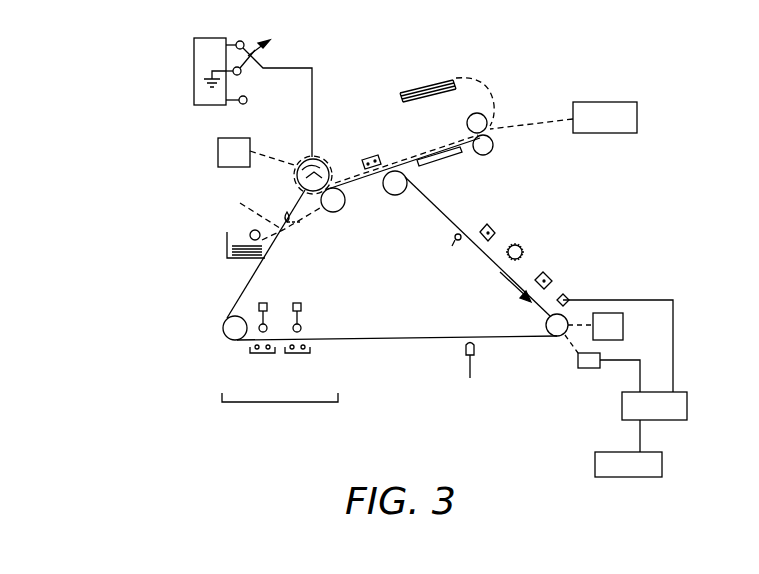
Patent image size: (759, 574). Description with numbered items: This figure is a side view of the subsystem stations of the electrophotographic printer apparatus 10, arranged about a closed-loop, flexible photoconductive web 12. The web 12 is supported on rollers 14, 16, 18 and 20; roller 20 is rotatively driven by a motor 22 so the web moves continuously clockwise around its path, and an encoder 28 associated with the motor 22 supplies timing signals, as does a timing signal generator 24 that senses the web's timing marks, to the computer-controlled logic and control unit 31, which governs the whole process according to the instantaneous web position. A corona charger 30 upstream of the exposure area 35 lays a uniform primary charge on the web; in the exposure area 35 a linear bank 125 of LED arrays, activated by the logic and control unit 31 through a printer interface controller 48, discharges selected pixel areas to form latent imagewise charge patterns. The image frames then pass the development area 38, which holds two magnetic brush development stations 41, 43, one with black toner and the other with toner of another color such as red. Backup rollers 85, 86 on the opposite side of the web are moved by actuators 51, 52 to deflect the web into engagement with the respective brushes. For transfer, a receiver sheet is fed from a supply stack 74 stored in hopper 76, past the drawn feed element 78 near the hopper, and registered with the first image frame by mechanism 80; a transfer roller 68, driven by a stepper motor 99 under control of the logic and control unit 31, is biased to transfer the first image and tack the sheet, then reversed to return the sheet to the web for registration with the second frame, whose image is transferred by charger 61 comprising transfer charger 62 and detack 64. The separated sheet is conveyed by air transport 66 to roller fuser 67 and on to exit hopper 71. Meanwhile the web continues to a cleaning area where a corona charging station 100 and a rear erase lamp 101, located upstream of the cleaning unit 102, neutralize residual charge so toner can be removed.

The apparatus 10 is at (549, 216).
The photoconductive web 12 is at (452, 216).
The roller 14 is at (395, 195).
The roller 16 is at (336, 212).
The roller 18 is at (224, 326).
The roller 20 is at (546, 328).
The motor 22 is at (623, 318).
The timing signal generator 24 is at (568, 296).
The encoder 28 is at (580, 370).
The corona charger 30 is at (548, 278).
The logic and control unit 31 is at (194, 50).
The exposure area 35 is at (480, 340).
The development area 38 is at (280, 402).
The magnetic brush development station 41 is at (262, 357).
The magnetic brush development station 43 is at (295, 357).
The printer interface controller 48 is at (476, 404).
The actuator 51 is at (268, 300).
The actuator 52 is at (305, 307).
The charger 61 is at (376, 155).
The transfer charger 62 is at (366, 157).
The detack 64 is at (389, 160).
The air transport 66 is at (440, 158).
The roller fuser 67 is at (496, 150).
The transfer roller 68 is at (308, 158).
The exit hopper 71 is at (398, 93).
The supply stack 74 is at (227, 240).
The hopper 76 is at (240, 260).
The feed roller 78 is at (250, 235).
The registration mechanism 80 is at (287, 210).
The backup roller 85 is at (268, 322).
The backup roller 86 is at (302, 328).
The stepper motor 99 is at (218, 150).
The corona charging station 100 is at (492, 224).
The rear erase lamp 101 is at (455, 240).
The cleaning unit 102 is at (525, 248).
The linear bank of LED arrays 125 is at (462, 350).